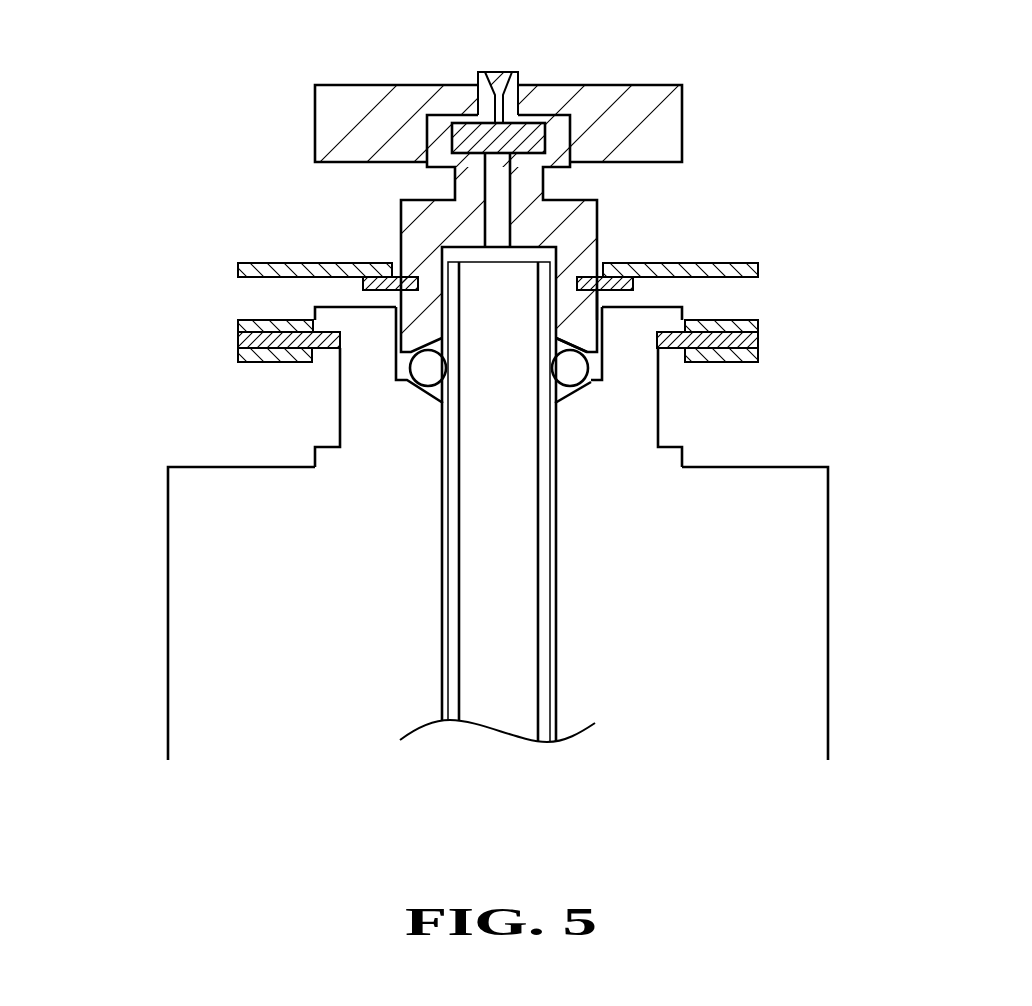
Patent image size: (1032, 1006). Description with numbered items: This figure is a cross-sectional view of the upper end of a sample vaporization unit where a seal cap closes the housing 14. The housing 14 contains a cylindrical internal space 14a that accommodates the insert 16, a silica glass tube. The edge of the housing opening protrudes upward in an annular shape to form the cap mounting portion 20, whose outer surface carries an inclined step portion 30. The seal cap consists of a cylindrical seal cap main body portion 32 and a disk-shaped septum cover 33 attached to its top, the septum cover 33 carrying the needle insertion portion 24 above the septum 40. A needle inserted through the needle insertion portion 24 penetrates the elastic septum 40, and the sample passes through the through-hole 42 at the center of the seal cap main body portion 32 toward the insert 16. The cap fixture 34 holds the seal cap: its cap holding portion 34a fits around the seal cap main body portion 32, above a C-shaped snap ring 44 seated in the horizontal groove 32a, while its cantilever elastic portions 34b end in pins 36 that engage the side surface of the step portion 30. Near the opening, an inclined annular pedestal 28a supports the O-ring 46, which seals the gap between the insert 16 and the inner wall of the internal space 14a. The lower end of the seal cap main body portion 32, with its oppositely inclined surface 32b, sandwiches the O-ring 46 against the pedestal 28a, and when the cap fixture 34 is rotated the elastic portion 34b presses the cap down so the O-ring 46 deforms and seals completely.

The housing 14 is at (830, 583).
The internal space 14a is at (558, 633).
The insert 16 is at (523, 506).
The cap mounting portion 20 is at (363, 400).
The needle insertion portion 24 is at (515, 72).
The pedestal 28a is at (566, 395).
The step portion 30 is at (330, 332).
The seal cap main body portion 32 is at (598, 208).
The horizontal groove 32a is at (566, 340).
The outer peripheral surface of holder 32b is at (601, 305).
The septum cover 33 is at (668, 103).
The cap fixture 34 is at (93, 248).
The cap holding portion 34a is at (238, 268).
The elastic portion 34b is at (238, 322).
The pin 36 is at (248, 348).
The septum 40 is at (486, 146).
The through-hole 42 is at (497, 220).
The C-shaped snap ring 44 is at (625, 266).
The O-ring 46 is at (575, 372).